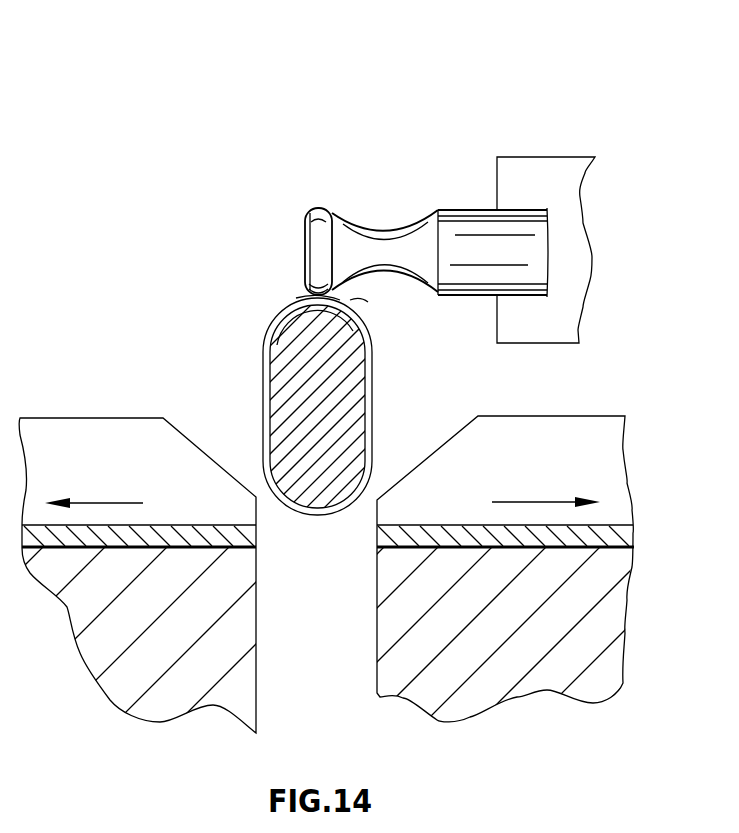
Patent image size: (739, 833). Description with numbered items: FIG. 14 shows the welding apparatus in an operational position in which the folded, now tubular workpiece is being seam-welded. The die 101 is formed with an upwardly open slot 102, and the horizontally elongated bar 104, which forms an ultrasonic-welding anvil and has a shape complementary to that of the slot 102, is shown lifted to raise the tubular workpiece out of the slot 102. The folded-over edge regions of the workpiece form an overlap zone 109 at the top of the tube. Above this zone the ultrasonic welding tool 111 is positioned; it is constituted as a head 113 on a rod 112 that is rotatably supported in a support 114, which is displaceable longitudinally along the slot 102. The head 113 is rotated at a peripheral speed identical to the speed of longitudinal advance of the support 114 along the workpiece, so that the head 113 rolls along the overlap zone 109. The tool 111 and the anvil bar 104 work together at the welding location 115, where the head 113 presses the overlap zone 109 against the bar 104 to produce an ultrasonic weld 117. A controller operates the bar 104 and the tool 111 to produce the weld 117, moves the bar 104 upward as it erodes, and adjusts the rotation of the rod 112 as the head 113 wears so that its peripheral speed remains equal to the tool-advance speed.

The die 101 is at (620, 528).
The slot 102 is at (378, 612).
The bar 104 is at (369, 416).
The overlap zone 109 is at (289, 270).
The ultrasonic welding tool 111 is at (460, 179).
The rod 112 is at (473, 168).
The head 113 is at (322, 210).
The support 114 is at (577, 155).
The welding location 115 is at (380, 310).
The ultrasonic weld 117 is at (300, 333).